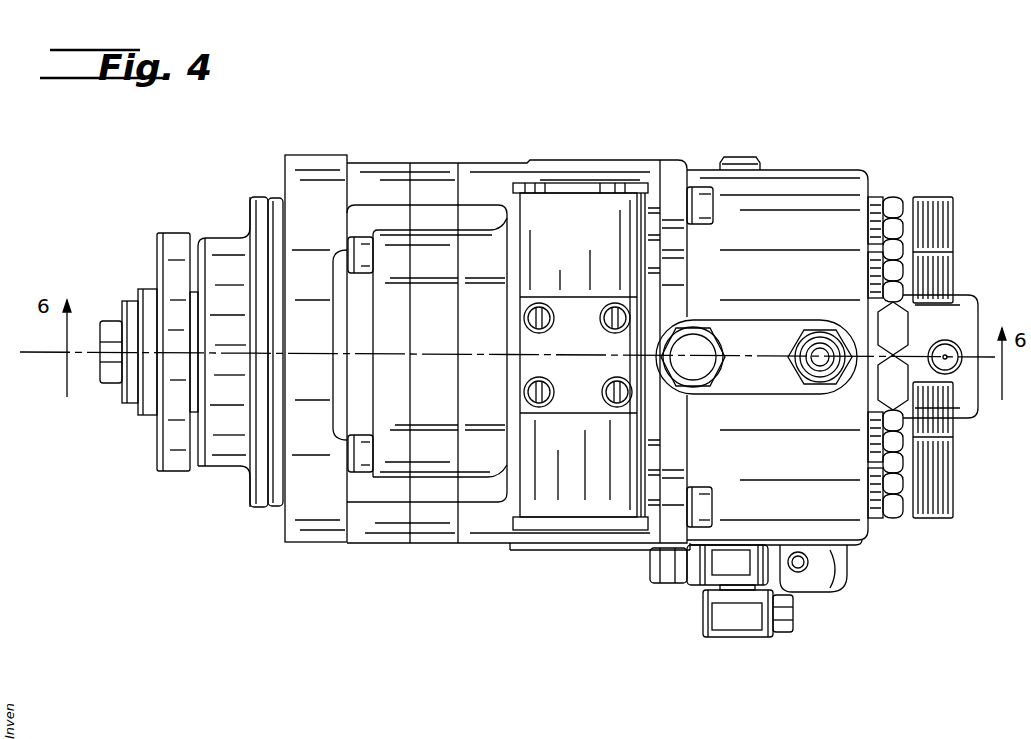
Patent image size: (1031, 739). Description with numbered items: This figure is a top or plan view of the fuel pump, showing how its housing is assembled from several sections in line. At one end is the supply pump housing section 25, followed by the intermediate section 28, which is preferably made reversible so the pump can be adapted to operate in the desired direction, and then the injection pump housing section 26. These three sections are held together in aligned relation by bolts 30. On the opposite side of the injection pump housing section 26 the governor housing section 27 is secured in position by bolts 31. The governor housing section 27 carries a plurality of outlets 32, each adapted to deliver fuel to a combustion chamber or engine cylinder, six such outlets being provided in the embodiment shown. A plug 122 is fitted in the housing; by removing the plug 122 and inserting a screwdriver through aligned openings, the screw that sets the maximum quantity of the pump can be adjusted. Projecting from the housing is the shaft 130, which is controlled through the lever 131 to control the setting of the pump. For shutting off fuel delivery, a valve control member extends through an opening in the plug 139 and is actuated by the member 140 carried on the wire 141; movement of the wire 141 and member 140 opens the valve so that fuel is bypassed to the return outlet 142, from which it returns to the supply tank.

The supply pump housing section 25 is at (256, 197).
The injection pump housing section 26 is at (560, 165).
The governor housing section 27 is at (822, 185).
The intermediate section 28 is at (432, 163).
The bolts 30 is at (350, 252).
The bolts 31 is at (714, 214).
The outlets 32 is at (953, 258).
The plug 122 is at (696, 336).
The shaft 130 is at (738, 157).
The lever 131 is at (728, 625).
The plug 139 is at (862, 386).
The member 140 is at (955, 372).
The wire 141 is at (948, 352).
The return outlet 142 is at (820, 334).